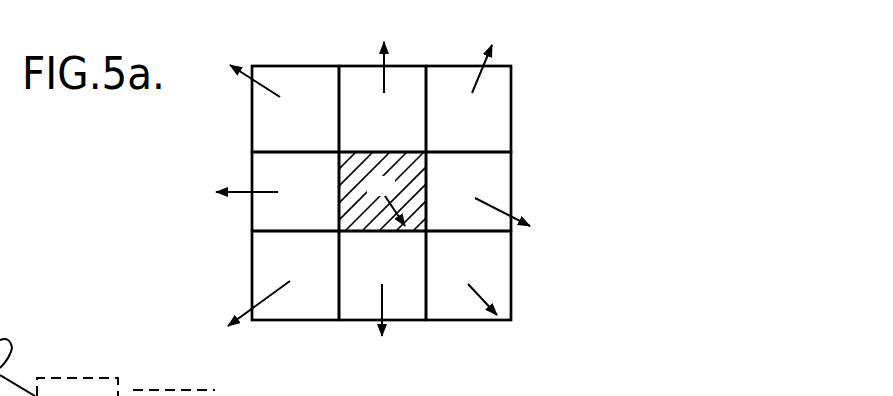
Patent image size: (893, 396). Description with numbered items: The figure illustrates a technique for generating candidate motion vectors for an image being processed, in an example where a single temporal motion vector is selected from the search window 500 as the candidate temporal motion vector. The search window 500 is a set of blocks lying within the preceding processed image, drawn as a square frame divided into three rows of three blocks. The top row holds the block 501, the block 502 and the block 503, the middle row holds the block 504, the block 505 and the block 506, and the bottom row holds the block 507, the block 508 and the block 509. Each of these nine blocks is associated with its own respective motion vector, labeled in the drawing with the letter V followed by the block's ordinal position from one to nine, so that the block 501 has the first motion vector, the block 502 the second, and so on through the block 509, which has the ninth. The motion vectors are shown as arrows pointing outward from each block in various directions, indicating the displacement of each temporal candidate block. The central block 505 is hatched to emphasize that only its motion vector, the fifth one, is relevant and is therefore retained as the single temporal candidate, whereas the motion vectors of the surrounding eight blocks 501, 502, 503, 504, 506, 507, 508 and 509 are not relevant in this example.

The search window 500 is at (511, 97).
The block 501 is at (272, 118).
The block 502 is at (365, 88).
The block 503 is at (490, 128).
The block 504 is at (283, 213).
The block 505 is at (365, 167).
The block 506 is at (492, 184).
The block 507 is at (278, 250).
The block 508 is at (363, 290).
The block 509 is at (487, 257).